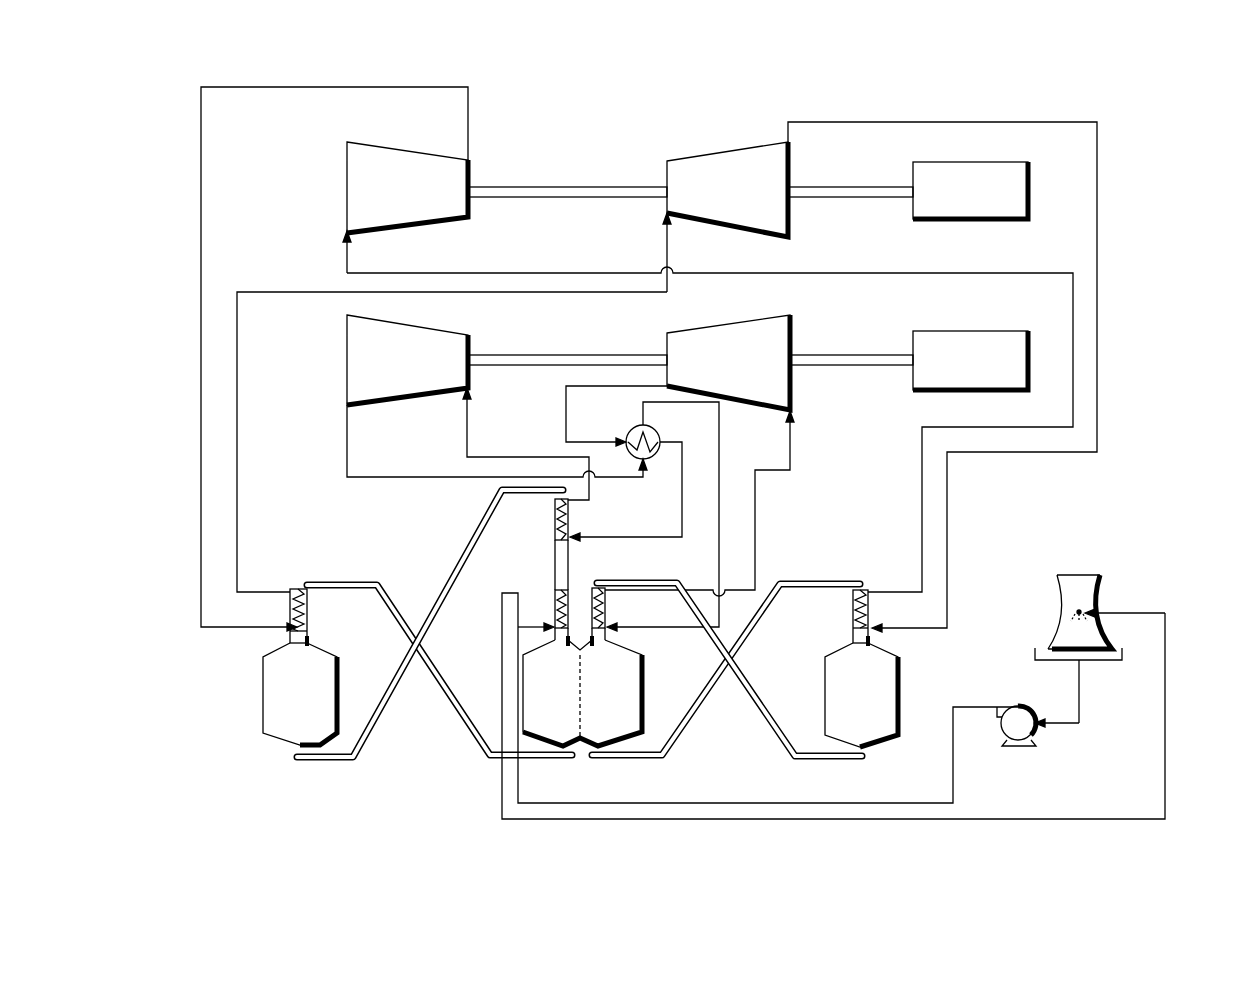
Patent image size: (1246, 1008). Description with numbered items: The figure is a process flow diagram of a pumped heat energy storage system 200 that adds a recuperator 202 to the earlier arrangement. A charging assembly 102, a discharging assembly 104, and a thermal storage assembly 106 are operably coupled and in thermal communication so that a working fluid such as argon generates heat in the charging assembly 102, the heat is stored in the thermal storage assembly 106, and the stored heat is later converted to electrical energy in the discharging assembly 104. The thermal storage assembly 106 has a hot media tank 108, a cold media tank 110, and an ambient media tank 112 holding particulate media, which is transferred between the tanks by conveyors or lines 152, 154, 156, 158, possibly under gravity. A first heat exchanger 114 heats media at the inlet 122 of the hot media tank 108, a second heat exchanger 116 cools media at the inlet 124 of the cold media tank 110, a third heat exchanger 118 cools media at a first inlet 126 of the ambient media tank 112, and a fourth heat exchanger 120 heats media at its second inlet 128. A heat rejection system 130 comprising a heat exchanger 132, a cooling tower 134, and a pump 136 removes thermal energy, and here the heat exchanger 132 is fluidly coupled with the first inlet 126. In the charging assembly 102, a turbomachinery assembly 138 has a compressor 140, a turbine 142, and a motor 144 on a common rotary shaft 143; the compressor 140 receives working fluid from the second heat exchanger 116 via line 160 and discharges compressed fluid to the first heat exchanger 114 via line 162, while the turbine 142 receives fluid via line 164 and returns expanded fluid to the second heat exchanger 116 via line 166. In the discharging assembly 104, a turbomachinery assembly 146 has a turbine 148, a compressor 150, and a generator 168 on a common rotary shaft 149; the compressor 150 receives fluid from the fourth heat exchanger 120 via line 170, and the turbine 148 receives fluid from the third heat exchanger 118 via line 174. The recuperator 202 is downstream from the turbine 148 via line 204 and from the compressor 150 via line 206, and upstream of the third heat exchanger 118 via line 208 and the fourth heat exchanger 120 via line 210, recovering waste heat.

The PHES system 200 is at (1153, 101).
The charging assembly 102 is at (313, 131).
The discharging assembly 104 is at (330, 331).
The thermal storage assembly 106 is at (238, 693).
The hot media tank 108 is at (272, 735).
The cold media tank 110 is at (878, 740).
The ambient media tank 112 is at (608, 740).
The first heat exchanger 114 is at (306, 605).
The second heat exchanger 116 is at (853, 604).
The third heat exchanger 118 is at (555, 520).
The fourth heat exchanger 120 is at (606, 604).
The inlet 122 is at (323, 643).
The inlet 124 is at (826, 642).
The first inlet 126 is at (528, 640).
The second inlet 128 is at (627, 642).
The heat rejection system 130 is at (1030, 588).
The heat exchanger 132 is at (553, 606).
The cooling tower 134 is at (1098, 576).
The pump 136 is at (1015, 706).
The turbomachinery assembly 138 is at (584, 141).
The compressor 140 is at (385, 150).
The turbine 142 is at (741, 150).
The common rotary shaft 143 is at (537, 200).
The motor 144 is at (950, 162).
The turbomachinery assembly 146 is at (590, 341).
The turbine 148 is at (432, 332).
The common rotary shaft 149 is at (538, 356).
The compressor 150 is at (720, 328).
The conveyor or line 152 is at (350, 578).
The conveyor or line 154 is at (380, 725).
The conveyor or line 156 is at (700, 705).
The conveyor or line 158 is at (765, 738).
The line 160 is at (921, 452).
The line 162 is at (200, 378).
The line 164 is at (237, 440).
The line 166 is at (1098, 333).
The generator 168 is at (950, 331).
The line 170 is at (756, 530).
The line 174 is at (465, 428).
The recuperator 202 is at (657, 433).
The line 204 is at (445, 480).
The line 206 is at (563, 402).
The line 208 is at (680, 490).
The line 210 is at (719, 540).